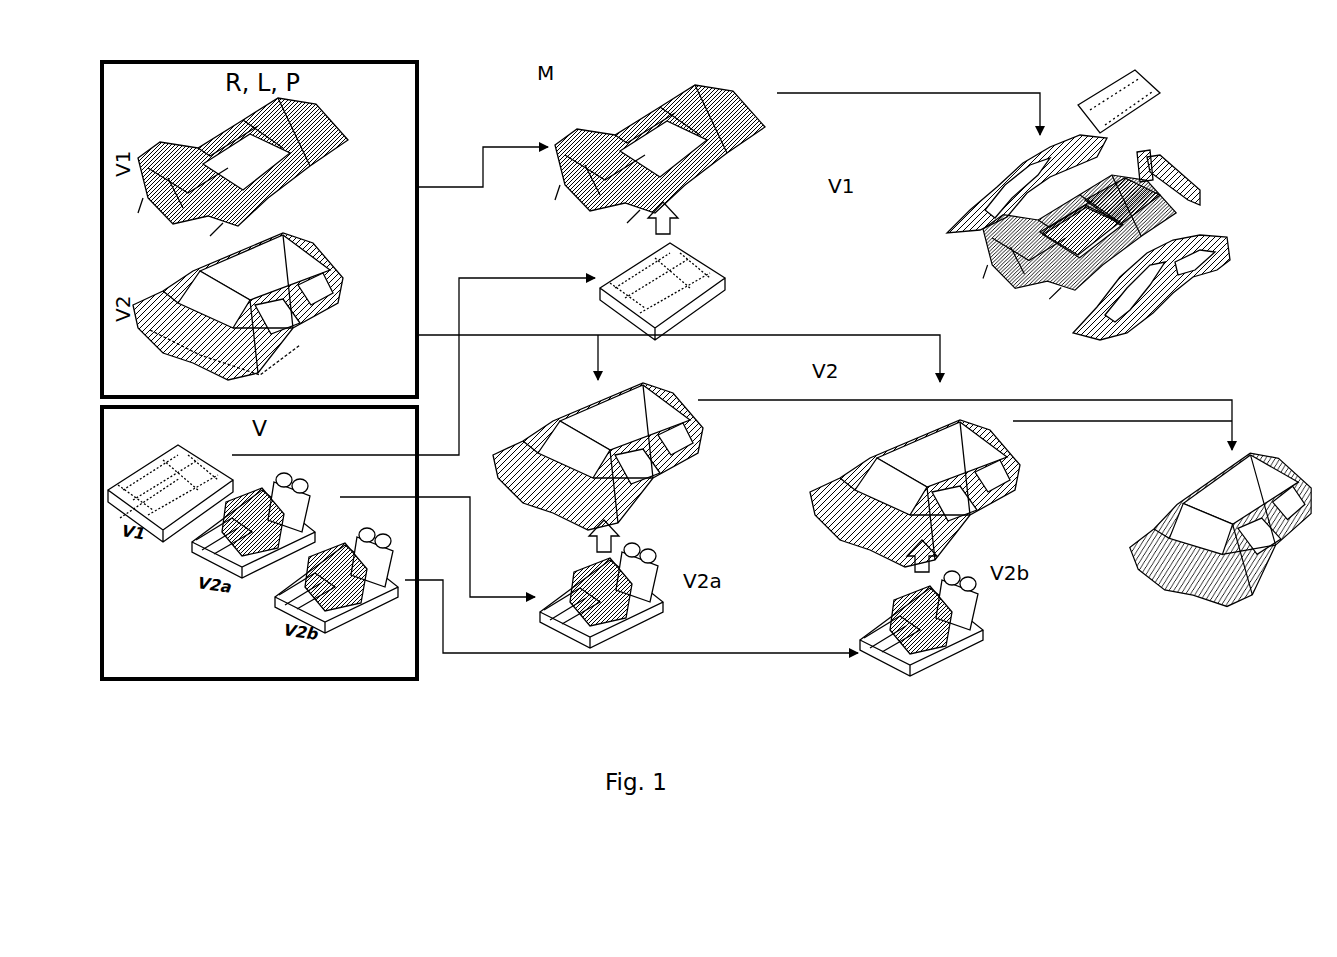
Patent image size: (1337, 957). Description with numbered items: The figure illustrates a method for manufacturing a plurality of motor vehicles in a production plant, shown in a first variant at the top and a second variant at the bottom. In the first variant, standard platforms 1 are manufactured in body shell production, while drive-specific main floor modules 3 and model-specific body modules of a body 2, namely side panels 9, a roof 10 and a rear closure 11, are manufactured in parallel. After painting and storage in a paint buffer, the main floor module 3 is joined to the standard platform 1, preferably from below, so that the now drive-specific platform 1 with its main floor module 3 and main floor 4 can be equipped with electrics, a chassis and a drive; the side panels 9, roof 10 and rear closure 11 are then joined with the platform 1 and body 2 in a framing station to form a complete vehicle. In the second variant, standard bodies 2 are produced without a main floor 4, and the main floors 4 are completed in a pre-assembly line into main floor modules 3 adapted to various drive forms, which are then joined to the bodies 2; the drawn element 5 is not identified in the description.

The standard platform 1 is at (282, 183).
The body 2 is at (305, 310).
The main floor module 3 is at (147, 560).
The main floor 4 is at (162, 470).
The channel 5 is at (186, 508).
The side panels 9 is at (1212, 262).
The roof 10 is at (1145, 105).
The rear closure 11 is at (1185, 182).